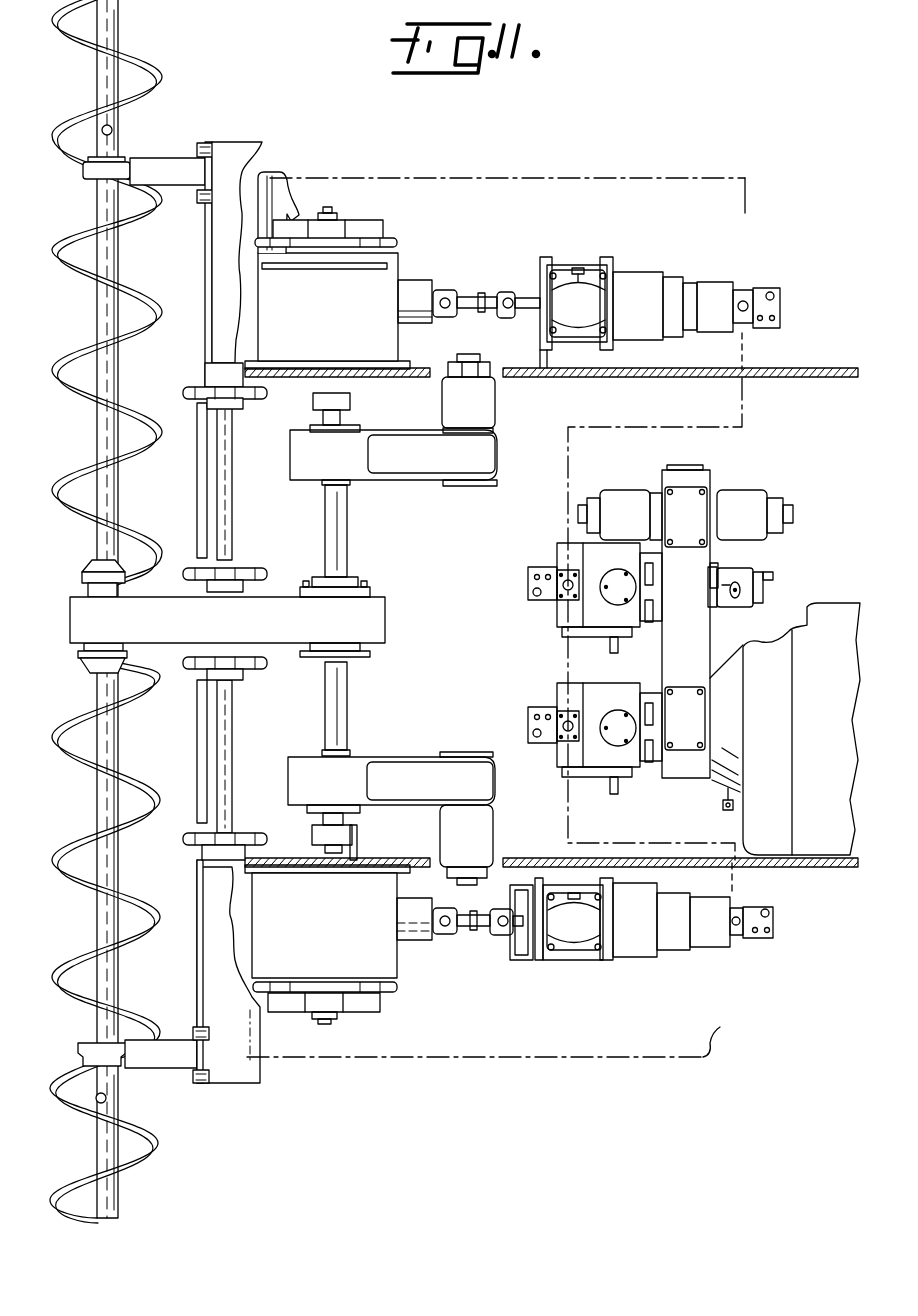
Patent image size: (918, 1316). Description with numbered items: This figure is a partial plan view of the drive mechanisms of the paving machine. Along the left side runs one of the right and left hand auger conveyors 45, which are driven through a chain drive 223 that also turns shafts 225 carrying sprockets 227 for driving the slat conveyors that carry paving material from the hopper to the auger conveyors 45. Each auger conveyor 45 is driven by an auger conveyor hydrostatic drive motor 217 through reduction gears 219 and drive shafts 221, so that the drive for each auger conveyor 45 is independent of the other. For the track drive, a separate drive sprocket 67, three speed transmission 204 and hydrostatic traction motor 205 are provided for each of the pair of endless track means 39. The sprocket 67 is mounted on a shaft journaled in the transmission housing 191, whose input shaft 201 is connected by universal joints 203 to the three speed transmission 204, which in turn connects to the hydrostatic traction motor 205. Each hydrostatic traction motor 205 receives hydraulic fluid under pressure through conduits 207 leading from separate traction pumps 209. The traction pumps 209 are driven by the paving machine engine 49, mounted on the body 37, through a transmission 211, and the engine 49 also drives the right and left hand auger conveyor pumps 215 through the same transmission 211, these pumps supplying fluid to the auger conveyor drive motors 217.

The body 37 is at (848, 338).
The endless track means 39 is at (684, 142).
The auger conveyors 45 is at (78, 386).
The engine 49 is at (845, 620).
The drive sprocket 67 is at (378, 210).
The transmission housing 191 is at (338, 615).
The input shaft 201 is at (455, 256).
The universal joints 203 is at (520, 256).
The three speed transmission 204 is at (560, 290).
The hydrostatic traction motor 205 is at (644, 278).
The conduits 207 is at (745, 416).
The traction pumps 209 is at (563, 688).
The transmission 211 is at (694, 773).
The auger conveyor pumps 215 is at (628, 495).
The auger conveyor hydrostatic drive motors 217 is at (492, 410).
The reduction gears 219 is at (432, 466).
The drive shafts 221 is at (337, 540).
The chain drive 223 is at (378, 619).
The shafts 225 is at (232, 529).
The sprockets 227 is at (262, 408).